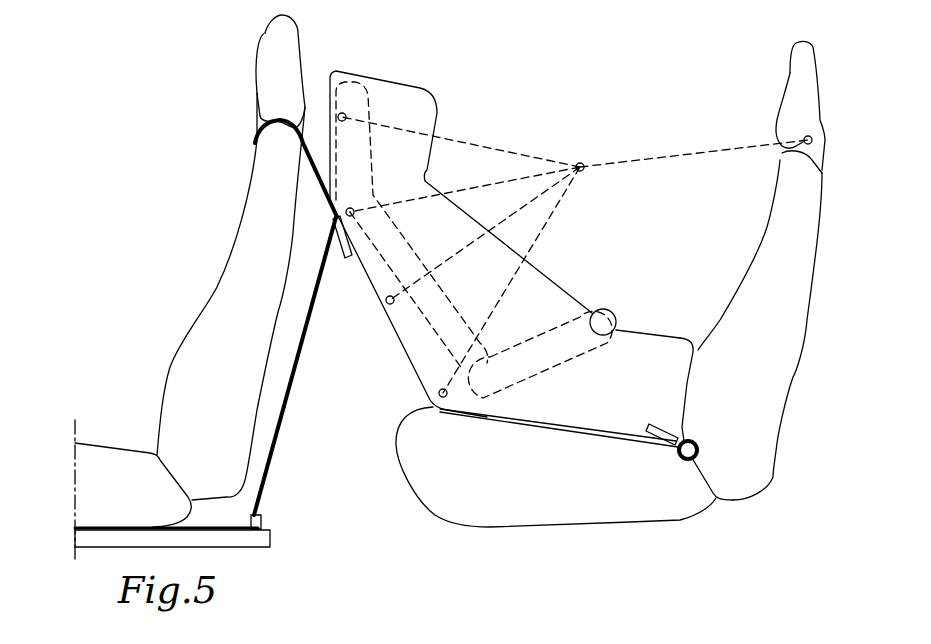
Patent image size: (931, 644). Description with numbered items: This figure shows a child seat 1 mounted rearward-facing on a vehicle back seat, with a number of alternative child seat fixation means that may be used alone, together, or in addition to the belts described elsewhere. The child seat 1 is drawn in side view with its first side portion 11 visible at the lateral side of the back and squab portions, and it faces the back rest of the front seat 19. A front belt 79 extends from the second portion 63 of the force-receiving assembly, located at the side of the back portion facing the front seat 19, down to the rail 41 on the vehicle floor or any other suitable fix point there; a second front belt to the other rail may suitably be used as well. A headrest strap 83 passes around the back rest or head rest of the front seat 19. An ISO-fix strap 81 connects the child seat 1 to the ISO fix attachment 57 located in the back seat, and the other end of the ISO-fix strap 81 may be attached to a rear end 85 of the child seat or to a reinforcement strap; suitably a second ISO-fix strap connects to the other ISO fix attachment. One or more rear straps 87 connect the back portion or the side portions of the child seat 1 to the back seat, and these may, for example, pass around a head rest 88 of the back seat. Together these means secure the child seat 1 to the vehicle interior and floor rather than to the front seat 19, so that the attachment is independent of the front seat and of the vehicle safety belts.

The child seat 1 is at (586, 107).
The first side portion 11 is at (406, 82).
The front seat 19 is at (243, 335).
The rail 41 is at (253, 540).
The ISO fix attachment 57 is at (688, 463).
The second portion of the force-receiving assembly 63 is at (346, 262).
The front belt 79 is at (290, 407).
The ISO-fix strap 81 is at (647, 433).
The headrest strap 83 is at (258, 124).
The rear end of the child seat 85 is at (655, 373).
The rear strap 87 is at (502, 143).
The head rest 88 is at (790, 108).